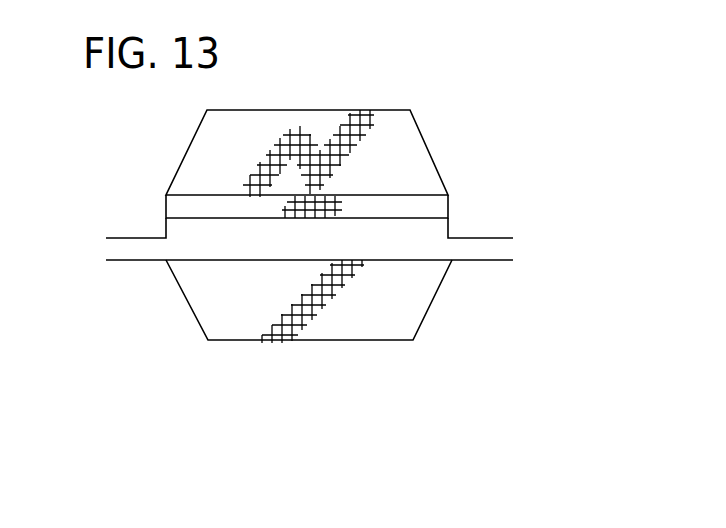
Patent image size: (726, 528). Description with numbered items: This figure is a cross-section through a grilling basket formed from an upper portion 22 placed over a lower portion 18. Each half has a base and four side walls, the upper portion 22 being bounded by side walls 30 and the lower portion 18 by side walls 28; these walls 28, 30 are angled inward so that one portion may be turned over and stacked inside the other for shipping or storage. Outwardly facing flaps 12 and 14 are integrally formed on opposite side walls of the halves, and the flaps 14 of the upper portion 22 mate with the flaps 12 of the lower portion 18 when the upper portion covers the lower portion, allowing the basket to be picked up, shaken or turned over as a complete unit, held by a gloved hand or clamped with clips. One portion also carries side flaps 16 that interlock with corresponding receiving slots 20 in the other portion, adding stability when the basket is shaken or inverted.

The flap 12 is at (140, 263).
The flap 14 is at (141, 238).
The side flap 16 is at (432, 243).
The lower portion 18 is at (354, 358).
The receiving slot 20 is at (425, 213).
The upper portion 22 is at (360, 108).
The side wall 28 is at (190, 320).
The side wall 30 is at (188, 145).